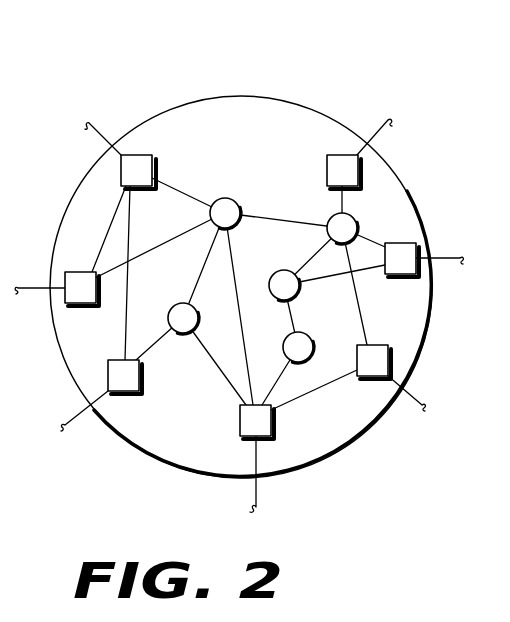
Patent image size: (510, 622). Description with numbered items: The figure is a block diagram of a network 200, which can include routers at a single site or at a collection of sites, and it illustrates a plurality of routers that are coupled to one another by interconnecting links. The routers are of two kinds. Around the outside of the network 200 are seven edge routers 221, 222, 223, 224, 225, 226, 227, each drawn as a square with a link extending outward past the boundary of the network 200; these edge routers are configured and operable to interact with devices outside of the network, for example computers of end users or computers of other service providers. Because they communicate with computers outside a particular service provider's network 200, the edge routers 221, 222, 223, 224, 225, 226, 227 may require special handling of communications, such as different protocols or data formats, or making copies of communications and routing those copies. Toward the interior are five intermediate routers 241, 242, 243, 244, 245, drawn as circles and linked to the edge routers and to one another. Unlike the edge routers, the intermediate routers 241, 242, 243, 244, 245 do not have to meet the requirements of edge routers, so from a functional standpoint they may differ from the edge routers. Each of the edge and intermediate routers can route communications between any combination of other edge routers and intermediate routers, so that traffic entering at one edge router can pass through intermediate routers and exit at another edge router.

The network 200 is at (366, 74).
The edge router 221 is at (147, 155).
The edge router 222 is at (80, 303).
The edge router 223 is at (128, 391).
The edge router 224 is at (240, 421).
The edge router 225 is at (327, 164).
The edge router 226 is at (400, 243).
The edge router 227 is at (370, 376).
The intermediate router 241 is at (233, 200).
The intermediate router 242 is at (174, 307).
The intermediate router 243 is at (289, 271).
The intermediate router 244 is at (306, 335).
The intermediate router 245 is at (331, 221).